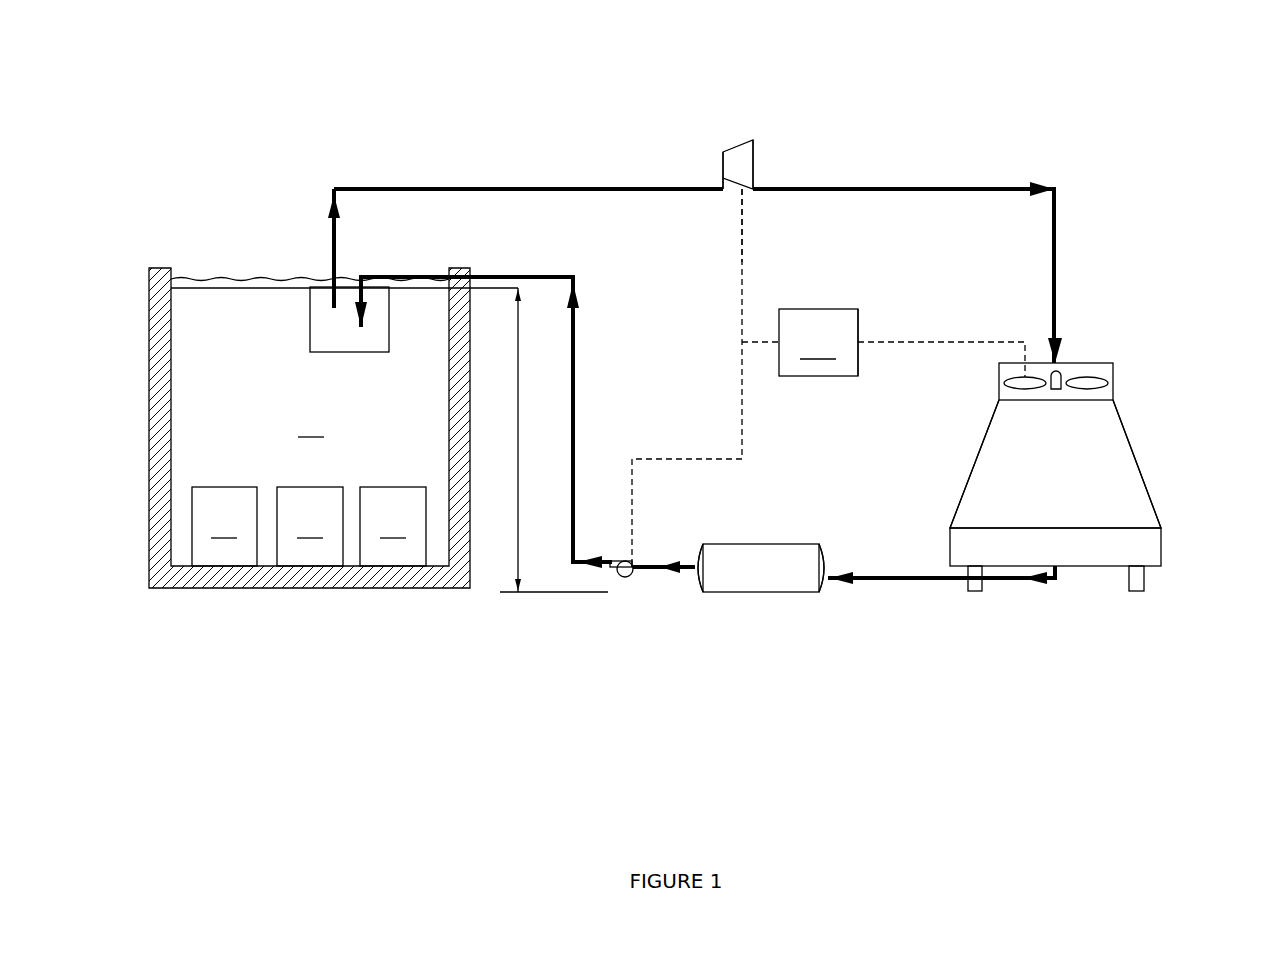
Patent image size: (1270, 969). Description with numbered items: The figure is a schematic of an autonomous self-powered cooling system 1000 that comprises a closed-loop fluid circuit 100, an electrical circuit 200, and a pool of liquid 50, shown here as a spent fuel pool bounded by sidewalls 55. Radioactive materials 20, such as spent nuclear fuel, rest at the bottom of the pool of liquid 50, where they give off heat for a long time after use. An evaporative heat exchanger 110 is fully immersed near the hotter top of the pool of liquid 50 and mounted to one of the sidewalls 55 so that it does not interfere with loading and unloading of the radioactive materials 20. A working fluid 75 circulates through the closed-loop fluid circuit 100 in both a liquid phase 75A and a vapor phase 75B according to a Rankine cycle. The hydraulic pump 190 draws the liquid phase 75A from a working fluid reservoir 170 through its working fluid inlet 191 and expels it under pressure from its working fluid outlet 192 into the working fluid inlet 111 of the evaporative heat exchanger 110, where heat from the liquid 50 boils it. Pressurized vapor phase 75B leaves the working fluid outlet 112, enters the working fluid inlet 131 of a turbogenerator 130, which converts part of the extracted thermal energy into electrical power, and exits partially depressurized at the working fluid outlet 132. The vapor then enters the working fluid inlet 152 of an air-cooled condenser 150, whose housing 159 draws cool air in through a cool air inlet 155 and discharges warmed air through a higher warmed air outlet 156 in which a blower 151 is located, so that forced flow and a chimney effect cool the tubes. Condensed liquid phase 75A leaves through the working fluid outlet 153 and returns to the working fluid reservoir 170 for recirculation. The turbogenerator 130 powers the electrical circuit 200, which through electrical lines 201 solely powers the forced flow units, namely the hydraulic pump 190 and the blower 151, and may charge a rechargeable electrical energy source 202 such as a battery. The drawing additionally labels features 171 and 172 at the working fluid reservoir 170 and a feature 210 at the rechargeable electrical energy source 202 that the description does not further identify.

The autonomous self-powered cooling system 1000 is at (1115, 112).
The sidewall of the pool 55 is at (158, 340).
The pool of liquid 50 is at (311, 426).
The radioactive materials 20 is at (309, 526).
The evaporative heat exchanger 110 is at (310, 335).
The working fluid inlet of the evaporative heat exchanger 111 is at (356, 285).
The working fluid outlet of the evaporative heat exchanger 112 is at (331, 250).
The working fluid outlet of the hydraulic pump 192 is at (609, 565).
The working fluid 75 is at (698, 386).
The liquid phase of the working fluid 75A is at (920, 580).
The vapor phase of the working fluid 75B is at (927, 187).
The closed-loop fluid circuit 100 is at (1070, 252).
The turbogenerator 130 is at (740, 146).
The working fluid inlet of the turbogenerator 131 is at (720, 182).
The working fluid outlet of the turbogenerator 132 is at (757, 184).
The electrical circuit 200 is at (752, 255).
The electrical lines 201 is at (745, 293).
The rechargeable electrical energy source 202 is at (818, 342).
The controller output 210 is at (862, 346).
The condenser 150 is at (1118, 410).
The blower 151 is at (1107, 378).
The working fluid inlet of the condenser 152 is at (1060, 362).
The working fluid outlet of the condenser 153 is at (1057, 568).
The cool air inlet 155 is at (1128, 568).
The warmed air outlet 156 is at (1096, 362).
The housing 159 is at (1117, 445).
The working fluid reservoir 170 is at (745, 578).
The reservoir inlet 171 is at (831, 582).
The reservoir outlet 172 is at (697, 560).
The hydraulic pump 190 is at (627, 580).
The working fluid inlet of the hydraulic pump 191 is at (633, 562).